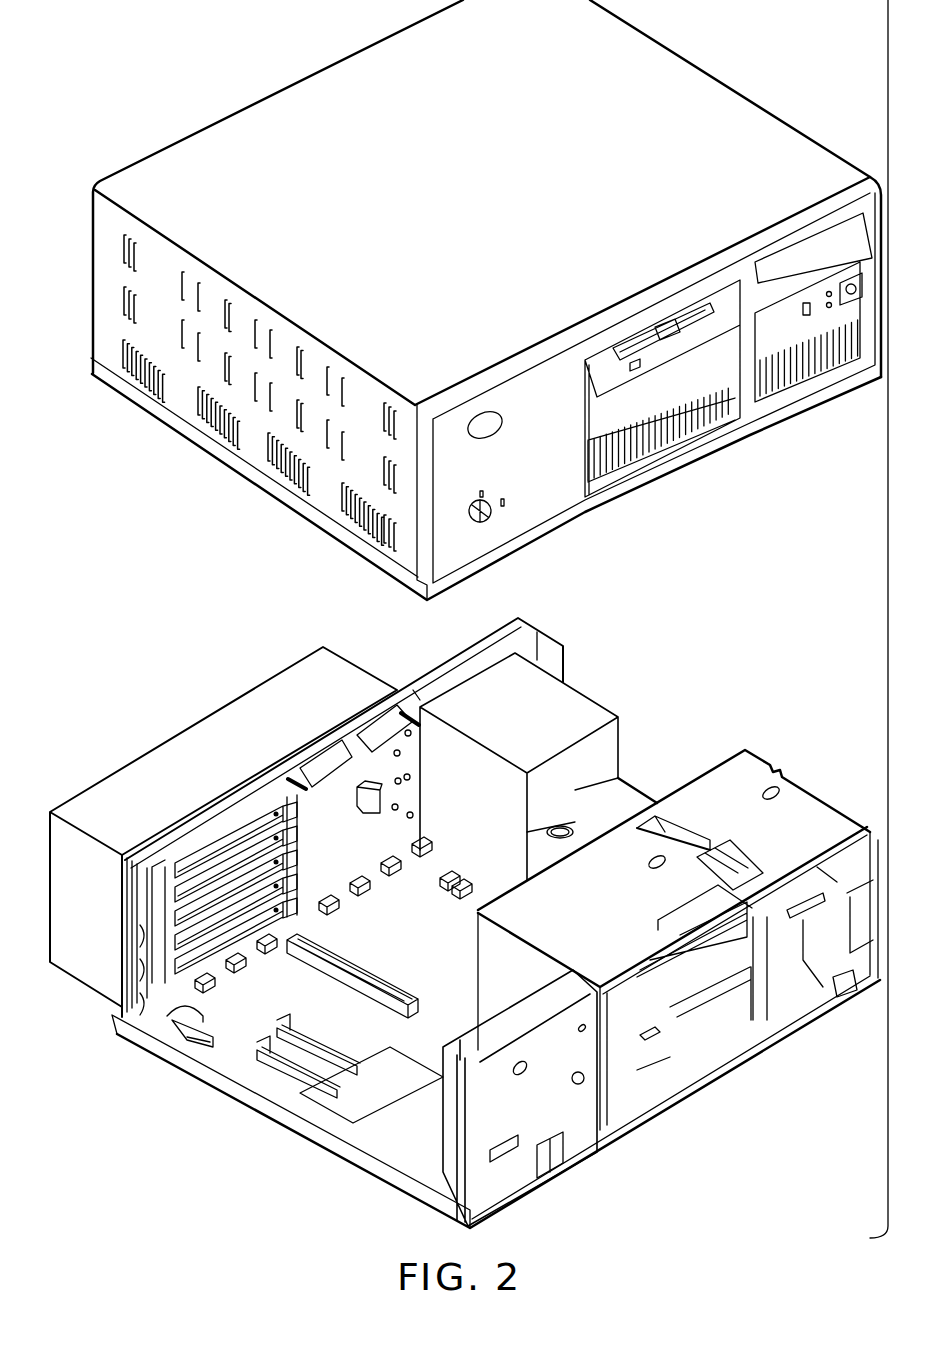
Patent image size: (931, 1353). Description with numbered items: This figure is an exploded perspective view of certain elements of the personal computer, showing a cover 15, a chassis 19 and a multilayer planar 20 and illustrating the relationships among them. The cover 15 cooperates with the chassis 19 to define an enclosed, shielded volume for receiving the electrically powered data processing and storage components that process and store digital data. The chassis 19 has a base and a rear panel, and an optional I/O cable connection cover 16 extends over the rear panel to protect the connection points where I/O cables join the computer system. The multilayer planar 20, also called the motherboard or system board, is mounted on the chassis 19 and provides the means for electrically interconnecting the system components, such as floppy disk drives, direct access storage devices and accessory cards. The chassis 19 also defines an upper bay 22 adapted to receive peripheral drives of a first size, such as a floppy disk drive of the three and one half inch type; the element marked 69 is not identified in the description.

The cover 15 is at (255, 100).
The I/O cable connection cover 16 is at (173, 735).
The chassis 19 is at (270, 1108).
The multilayer planar 20 is at (167, 1016).
The upper bay 22 is at (742, 942).
The front bracket 69 is at (440, 1120).